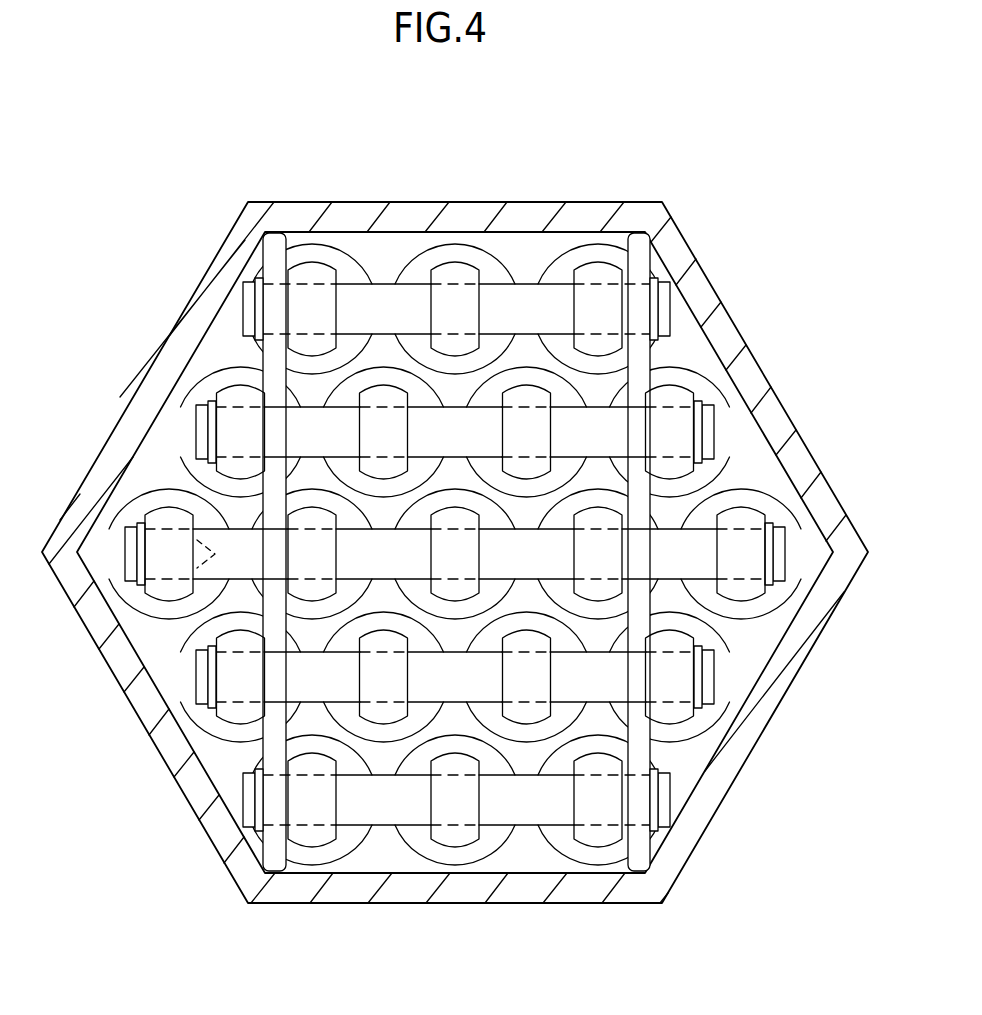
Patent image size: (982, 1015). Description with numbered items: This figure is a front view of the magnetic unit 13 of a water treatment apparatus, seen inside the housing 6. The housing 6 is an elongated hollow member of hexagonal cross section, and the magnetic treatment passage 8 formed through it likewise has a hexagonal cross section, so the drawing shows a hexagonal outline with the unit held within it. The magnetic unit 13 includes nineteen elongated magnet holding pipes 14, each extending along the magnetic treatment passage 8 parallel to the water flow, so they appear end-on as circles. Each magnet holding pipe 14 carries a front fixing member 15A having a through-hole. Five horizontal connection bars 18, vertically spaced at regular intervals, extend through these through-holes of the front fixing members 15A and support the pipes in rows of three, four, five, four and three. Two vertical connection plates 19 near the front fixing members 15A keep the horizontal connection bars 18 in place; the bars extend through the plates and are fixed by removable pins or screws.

The housing 6 is at (747, 353).
The magnetic treatment passage 8 is at (693, 760).
The magnetic unit 13 is at (757, 634).
The magnet holding pipe 14 is at (545, 257).
The front fixing member 15A is at (421, 277).
The horizontal connection bar 18 is at (377, 808).
The vertical connection plate 19 is at (272, 357).